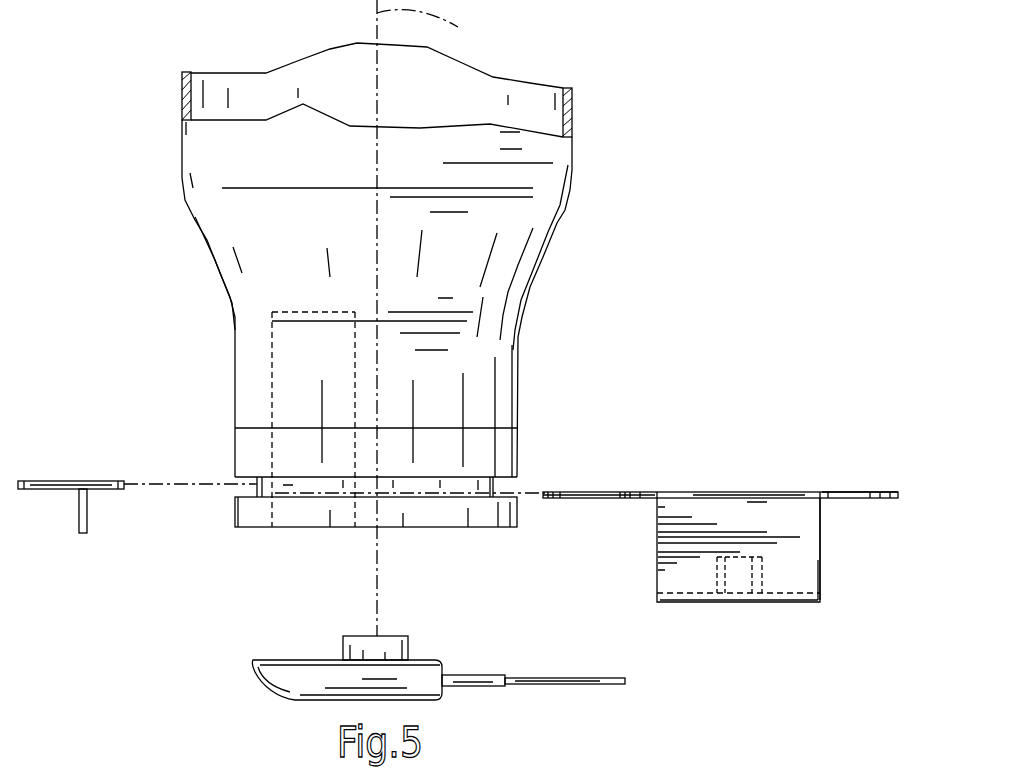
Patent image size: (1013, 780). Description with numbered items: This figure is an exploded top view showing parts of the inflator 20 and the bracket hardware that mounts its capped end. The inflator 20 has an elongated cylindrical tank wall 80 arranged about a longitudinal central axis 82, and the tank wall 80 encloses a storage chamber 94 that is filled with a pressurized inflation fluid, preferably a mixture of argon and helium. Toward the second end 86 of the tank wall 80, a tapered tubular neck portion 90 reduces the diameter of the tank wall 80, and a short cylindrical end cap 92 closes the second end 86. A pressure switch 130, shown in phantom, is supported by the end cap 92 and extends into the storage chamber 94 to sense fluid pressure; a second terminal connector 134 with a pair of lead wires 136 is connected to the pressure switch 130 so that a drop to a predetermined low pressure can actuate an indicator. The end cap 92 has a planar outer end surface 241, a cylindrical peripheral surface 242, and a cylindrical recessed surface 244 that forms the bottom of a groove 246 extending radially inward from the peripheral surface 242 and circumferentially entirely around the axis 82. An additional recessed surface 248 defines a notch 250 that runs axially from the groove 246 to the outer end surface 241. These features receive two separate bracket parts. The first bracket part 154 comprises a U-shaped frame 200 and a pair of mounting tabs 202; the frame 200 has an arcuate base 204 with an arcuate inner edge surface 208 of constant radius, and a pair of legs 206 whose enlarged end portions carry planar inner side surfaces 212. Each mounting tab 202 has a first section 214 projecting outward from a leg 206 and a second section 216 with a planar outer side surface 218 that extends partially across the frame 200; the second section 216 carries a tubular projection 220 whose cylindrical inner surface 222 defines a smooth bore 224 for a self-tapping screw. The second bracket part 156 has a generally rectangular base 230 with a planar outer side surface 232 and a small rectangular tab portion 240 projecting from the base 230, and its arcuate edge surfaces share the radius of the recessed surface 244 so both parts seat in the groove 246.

The inflator 20 is at (118, 142).
The longitudinal central axis 82 is at (433, 30).
The tank wall 80 is at (572, 120).
The storage chamber 94 is at (422, 111).
The neck portion 90 is at (527, 243).
The second end 86 is at (481, 429).
The cylindrical peripheral surface 242 is at (515, 455).
The cylindrical recessed surface 244 is at (500, 487).
The pressure switch 130 is at (272, 368).
The end cap 92 is at (490, 538).
The planar outer end surface 241 is at (425, 530).
The groove 246 is at (222, 481).
The notch 250 is at (229, 521).
The additional recessed surface 248 is at (257, 508).
The second bracket part 156 is at (77, 512).
The planar outer side surface 232 is at (56, 481).
The base 230 is at (46, 489).
The tab portion 240 is at (88, 525).
The first bracket part 154 is at (722, 550).
The U-shaped frame 200 is at (791, 490).
The mounting tab 202 is at (703, 512).
The arcuate base 204 is at (873, 492).
The leg 206 is at (640, 497).
The planar inner side surface 212 is at (577, 500).
The arcuate inner edge surface 208 is at (844, 503).
The first section 214 is at (780, 543).
The planar outer side surface 218 is at (697, 604).
The tubular projection 220 is at (765, 600).
The cylindrical inner surface 222 is at (736, 602).
The smooth bore 224 is at (724, 600).
The second section 216 is at (821, 604).
The second terminal connector 134 is at (290, 692).
The lead wires 136 is at (549, 685).